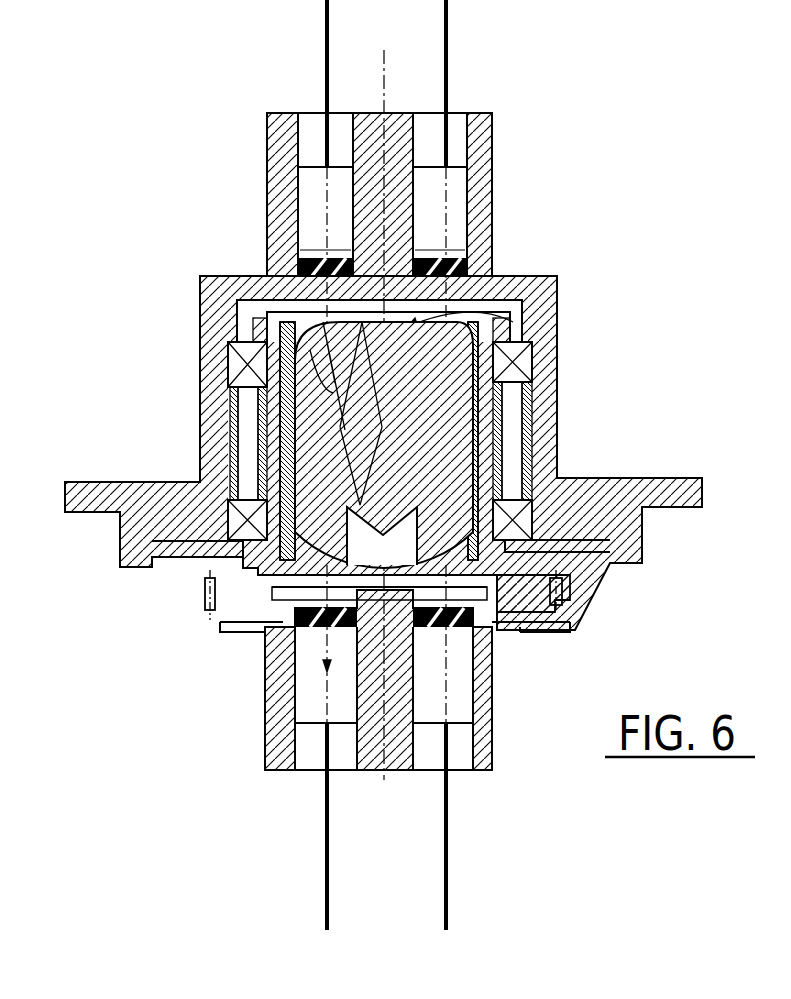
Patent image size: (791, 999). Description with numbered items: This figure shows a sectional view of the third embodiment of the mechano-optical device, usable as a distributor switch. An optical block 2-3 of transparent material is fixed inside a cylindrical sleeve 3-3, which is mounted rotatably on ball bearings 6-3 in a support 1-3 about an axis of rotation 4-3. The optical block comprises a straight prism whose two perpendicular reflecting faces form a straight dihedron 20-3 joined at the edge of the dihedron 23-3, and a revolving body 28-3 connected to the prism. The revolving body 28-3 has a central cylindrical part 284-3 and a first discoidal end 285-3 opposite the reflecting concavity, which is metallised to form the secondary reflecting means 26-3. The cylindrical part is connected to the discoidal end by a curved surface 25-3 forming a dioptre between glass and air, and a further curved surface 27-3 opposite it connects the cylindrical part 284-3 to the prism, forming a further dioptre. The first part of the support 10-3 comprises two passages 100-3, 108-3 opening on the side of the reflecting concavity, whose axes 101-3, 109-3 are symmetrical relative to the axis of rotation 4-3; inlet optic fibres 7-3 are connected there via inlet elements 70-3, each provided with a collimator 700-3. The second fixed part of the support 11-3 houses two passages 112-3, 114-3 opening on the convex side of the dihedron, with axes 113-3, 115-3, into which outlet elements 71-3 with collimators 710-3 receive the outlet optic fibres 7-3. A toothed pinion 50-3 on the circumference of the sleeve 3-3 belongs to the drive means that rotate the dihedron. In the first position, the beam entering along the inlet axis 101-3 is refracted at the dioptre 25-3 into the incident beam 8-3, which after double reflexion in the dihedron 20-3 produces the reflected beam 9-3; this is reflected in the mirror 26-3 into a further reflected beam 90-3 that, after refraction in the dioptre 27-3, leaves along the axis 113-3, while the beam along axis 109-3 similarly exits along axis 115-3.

The optic fibre 7-3 is at (325, 12).
The axis of rotation 4-3 is at (385, 100).
The first part of the support 10-3 is at (482, 133).
The passage 100-3 is at (302, 180).
The passage 108-3 is at (453, 118).
The inlet element 70-3 is at (308, 202).
The axis 101-3 is at (323, 240).
The axis 109-3 is at (443, 238).
The collimator 700-3 is at (473, 265).
The support 1-3 is at (222, 302).
The first discoidal end 285-3 is at (447, 340).
The revolving body 28-3 is at (475, 373).
The curved surface 25-3 is at (513, 322).
The ball bearings 6-3 is at (235, 358).
The incident beam 8-3 is at (227, 420).
The central cylindrical part 284-3 is at (495, 460).
The secondary reflecting means 26-3 is at (522, 405).
The optical block 2-3 is at (440, 424).
The straight dihedron 20-3 is at (430, 425).
The edge of the dihedron 23-3 is at (381, 537).
The reflected beam 9-3 is at (379, 571).
The further reflected beam 90-3 is at (232, 527).
The further curved surface 27-3 is at (475, 568).
The second fixed part of the support 11-3 is at (575, 597).
The toothed pinion 50-3 is at (197, 593).
The collimator 710-3 is at (287, 637).
The cylindrical sleeve 3-3 is at (537, 635).
The axis 113-3 is at (323, 642).
The outlet element 71-3 is at (303, 688).
The passage 112-3 is at (313, 760).
The passage 114-3 is at (463, 760).
The axis 115-3 is at (467, 716).